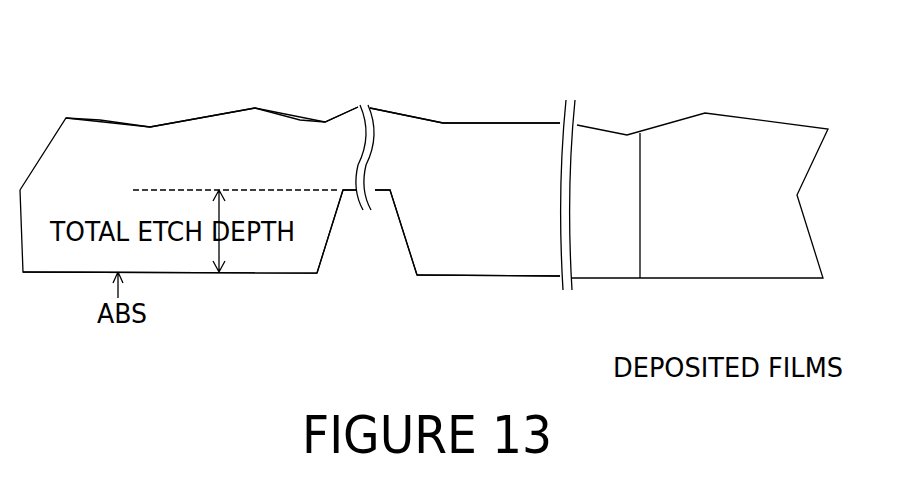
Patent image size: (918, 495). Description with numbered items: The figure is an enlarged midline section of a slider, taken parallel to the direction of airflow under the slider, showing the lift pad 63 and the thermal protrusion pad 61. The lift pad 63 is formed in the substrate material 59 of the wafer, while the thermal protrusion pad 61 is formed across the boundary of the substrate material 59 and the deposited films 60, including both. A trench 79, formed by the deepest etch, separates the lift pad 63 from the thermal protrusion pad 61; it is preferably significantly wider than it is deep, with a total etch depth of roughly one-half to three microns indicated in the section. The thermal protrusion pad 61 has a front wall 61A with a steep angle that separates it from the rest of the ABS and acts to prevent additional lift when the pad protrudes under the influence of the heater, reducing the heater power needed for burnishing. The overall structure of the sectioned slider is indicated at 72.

The slider / head structure 72 is at (173, 87).
The substrate material 59 is at (243, 163).
The lift pad 63 is at (273, 262).
The trench 79 is at (360, 237).
The front wall 61A is at (405, 258).
The thermal protrusion pad 61 is at (463, 263).
The deposited films 60 is at (708, 262).